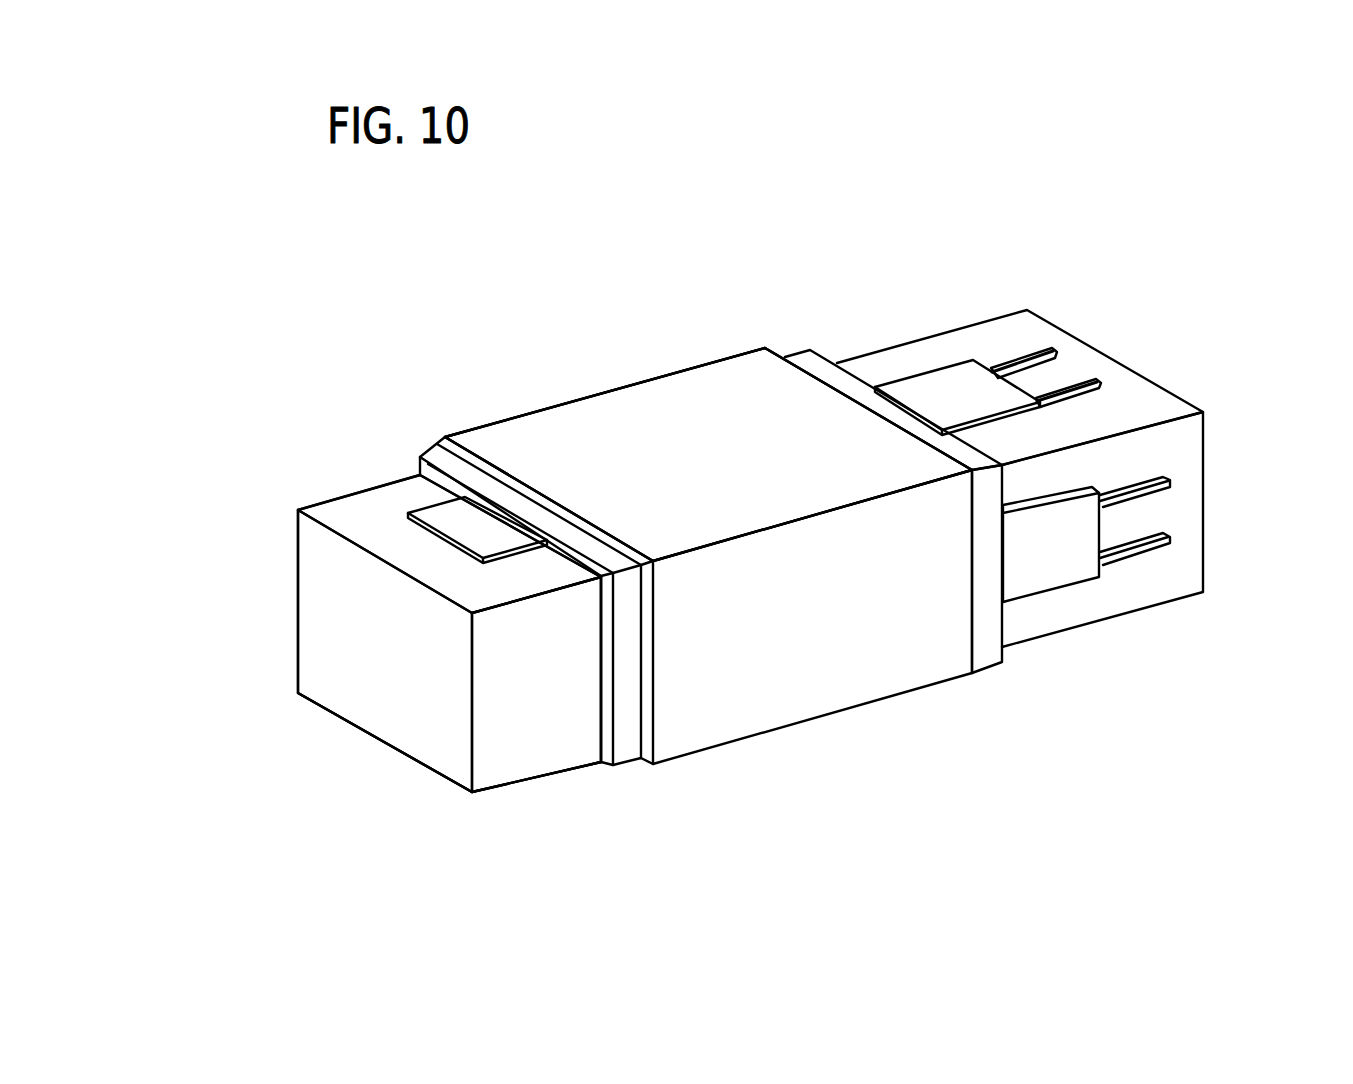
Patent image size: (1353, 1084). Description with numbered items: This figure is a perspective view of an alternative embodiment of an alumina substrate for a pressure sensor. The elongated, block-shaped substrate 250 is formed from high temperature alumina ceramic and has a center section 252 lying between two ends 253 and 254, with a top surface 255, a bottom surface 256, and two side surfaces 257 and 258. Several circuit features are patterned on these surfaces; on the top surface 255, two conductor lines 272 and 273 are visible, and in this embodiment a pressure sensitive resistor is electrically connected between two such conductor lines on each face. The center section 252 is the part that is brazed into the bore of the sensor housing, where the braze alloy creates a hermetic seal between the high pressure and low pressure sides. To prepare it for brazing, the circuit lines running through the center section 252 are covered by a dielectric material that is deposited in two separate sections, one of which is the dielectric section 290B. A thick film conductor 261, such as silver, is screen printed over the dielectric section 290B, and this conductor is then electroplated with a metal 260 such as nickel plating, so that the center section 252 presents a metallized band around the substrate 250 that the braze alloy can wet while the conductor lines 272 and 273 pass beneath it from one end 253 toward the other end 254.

The substrate 250 is at (744, 378).
The center section 252 is at (625, 433).
The end 253 is at (435, 710).
The end 254 is at (1177, 455).
The top surface 255 is at (390, 498).
The bottom surface 256 is at (462, 792).
The side surface 257 is at (533, 758).
The side surface 258 is at (297, 600).
The metal 260 is at (695, 435).
The thick film conductor 261 is at (432, 452).
The conductor line 272 is at (1023, 353).
The conductor line 273 is at (1077, 383).
The dielectric material section 290B is at (395, 527).